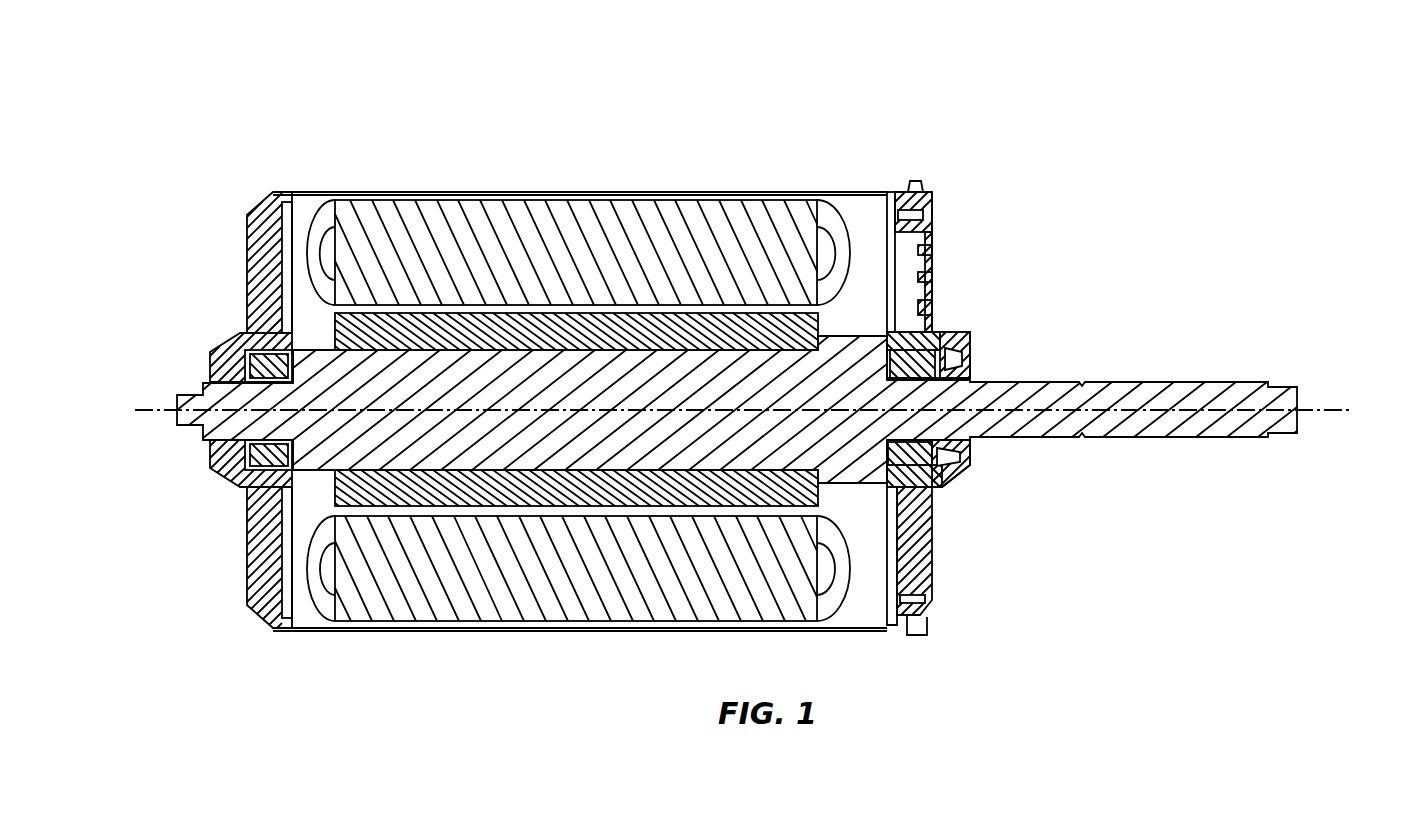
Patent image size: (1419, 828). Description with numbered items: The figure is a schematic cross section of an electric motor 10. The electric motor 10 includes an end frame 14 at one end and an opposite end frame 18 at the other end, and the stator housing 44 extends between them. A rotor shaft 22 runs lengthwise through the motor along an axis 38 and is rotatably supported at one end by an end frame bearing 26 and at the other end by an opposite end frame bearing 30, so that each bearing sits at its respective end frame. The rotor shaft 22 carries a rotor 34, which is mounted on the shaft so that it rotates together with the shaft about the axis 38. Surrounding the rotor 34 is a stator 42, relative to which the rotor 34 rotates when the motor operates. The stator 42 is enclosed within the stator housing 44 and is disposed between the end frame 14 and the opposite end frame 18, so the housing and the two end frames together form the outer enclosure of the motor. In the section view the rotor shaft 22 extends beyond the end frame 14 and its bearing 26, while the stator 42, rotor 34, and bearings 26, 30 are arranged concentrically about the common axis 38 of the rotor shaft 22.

The electric motor 10 is at (750, 333).
The end frame 14 is at (937, 200).
The opposite end frame 18 is at (252, 212).
The rotor shaft 22 is at (1015, 393).
The end frame bearing 26 is at (952, 332).
The opposite end frame bearing 30 is at (243, 348).
The rotor 34 is at (512, 328).
The axis 38 is at (1330, 406).
The stator 42 is at (420, 227).
The stator housing 44 is at (810, 190).